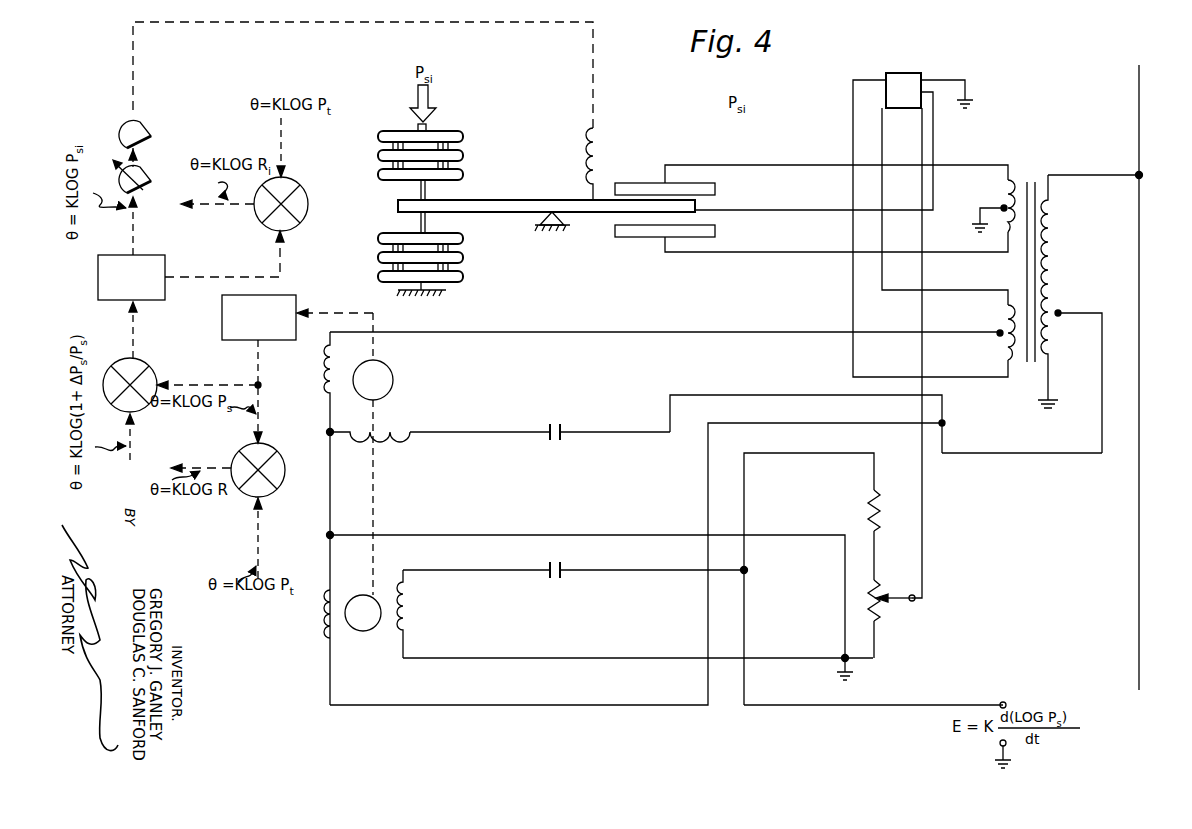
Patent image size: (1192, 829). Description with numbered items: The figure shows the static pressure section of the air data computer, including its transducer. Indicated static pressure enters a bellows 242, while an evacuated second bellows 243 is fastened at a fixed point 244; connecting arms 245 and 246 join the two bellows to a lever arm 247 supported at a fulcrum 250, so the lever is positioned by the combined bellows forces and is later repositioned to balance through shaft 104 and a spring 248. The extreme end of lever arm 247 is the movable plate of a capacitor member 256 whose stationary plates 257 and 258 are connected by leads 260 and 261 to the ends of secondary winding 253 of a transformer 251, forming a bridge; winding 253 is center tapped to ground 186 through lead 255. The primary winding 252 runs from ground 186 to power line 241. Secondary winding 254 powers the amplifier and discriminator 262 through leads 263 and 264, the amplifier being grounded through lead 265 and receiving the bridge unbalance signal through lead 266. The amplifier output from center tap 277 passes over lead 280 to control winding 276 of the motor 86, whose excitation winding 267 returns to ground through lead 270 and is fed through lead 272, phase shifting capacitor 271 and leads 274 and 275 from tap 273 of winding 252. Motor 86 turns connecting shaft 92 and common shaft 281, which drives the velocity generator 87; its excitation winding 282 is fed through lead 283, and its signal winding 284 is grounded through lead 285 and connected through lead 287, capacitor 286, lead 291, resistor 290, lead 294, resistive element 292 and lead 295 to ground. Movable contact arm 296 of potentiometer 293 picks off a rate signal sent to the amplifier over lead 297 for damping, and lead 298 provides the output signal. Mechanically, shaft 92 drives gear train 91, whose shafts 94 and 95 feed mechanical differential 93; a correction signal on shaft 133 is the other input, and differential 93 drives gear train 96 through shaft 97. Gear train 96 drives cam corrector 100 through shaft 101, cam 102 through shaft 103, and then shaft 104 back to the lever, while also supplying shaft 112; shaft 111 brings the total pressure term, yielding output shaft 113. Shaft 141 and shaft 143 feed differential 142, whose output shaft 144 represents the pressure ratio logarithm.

The motor 86 is at (438, 380).
The velocity generator 87 is at (513, 607).
The gear train 91 is at (283, 338).
The connecting shaft 92 is at (342, 315).
The mechanical differential 93 is at (146, 370).
The shaft 94 is at (262, 380).
The shaft 95 is at (205, 382).
The gear train 96 is at (158, 257).
The connecting shaft 97 is at (135, 345).
The cam corrector 100 is at (145, 175).
The connecting shaft 101 is at (133, 229).
The cam 102 is at (141, 127).
The connecting shaft 103 is at (136, 160).
The shaft 104 is at (138, 30).
The connecting shaft 111 is at (286, 155).
The connecting shaft 112 is at (282, 272).
The shaft 113 is at (207, 210).
The shaft 133 is at (134, 455).
The shaft 141 is at (262, 418).
The differential 142 is at (276, 458).
The shaft 143 is at (262, 540).
The shaft 144 is at (208, 462).
The ground 186 is at (973, 102).
The connecting lead 241 is at (1139, 157).
The bellows 242 is at (465, 158).
The second bellows 243 is at (465, 256).
The fixed point 244 is at (448, 288).
The connecting arm 245 is at (428, 196).
The connecting arm 246 is at (428, 229).
The lever arm 247 is at (556, 202).
The spring 248 is at (585, 153).
The fulcrum 250 is at (558, 226).
The transformer 251 is at (1038, 243).
The primary winding 252 is at (1056, 243).
The secondary winding 253 is at (1012, 192).
The secondary winding 254 is at (1003, 347).
The connecting lead 255 is at (984, 208).
The capacitor member 256 is at (669, 134).
The stationary plate 257 is at (630, 178).
The stationary plate 258 is at (625, 237).
The lead 260 is at (742, 165).
The lead 261 is at (752, 252).
The amplifier and discriminator 262 is at (902, 73).
The connecting lead 263 is at (853, 145).
The connecting lead 264 is at (882, 152).
The connecting lead 265 is at (945, 85).
The connecting lead 266 is at (762, 210).
The excitation winding 267 is at (400, 428).
The connecting lead 270 is at (474, 535).
The capacitor 271 is at (553, 426).
The connecting lead 272 is at (468, 430).
The tap 273 is at (1060, 310).
The connecting lead 274 is at (814, 395).
The connecting lead 275 is at (1042, 452).
The control winding 276 is at (332, 357).
The center tap 277 is at (1000, 331).
The connecting lead 280 is at (650, 332).
The common shaft 281 is at (375, 495).
The excitation winding 282 is at (318, 630).
The connecting lead 283 is at (708, 610).
The signal winding 284 is at (412, 632).
The connecting lead 285 is at (594, 658).
The phase shifting capacitor 286 is at (561, 568).
The connecting lead 287 is at (476, 568).
The resistor 290 is at (870, 518).
The connecting lead 291 is at (786, 453).
The resistive element 292 is at (876, 614).
The potentiometer 293 is at (958, 590).
The connecting lead 294 is at (875, 563).
The connecting lead 295 is at (875, 643).
The movable contact arm 296 is at (900, 595).
The connecting lead 297 is at (922, 527).
The connecting lead 298 is at (910, 705).